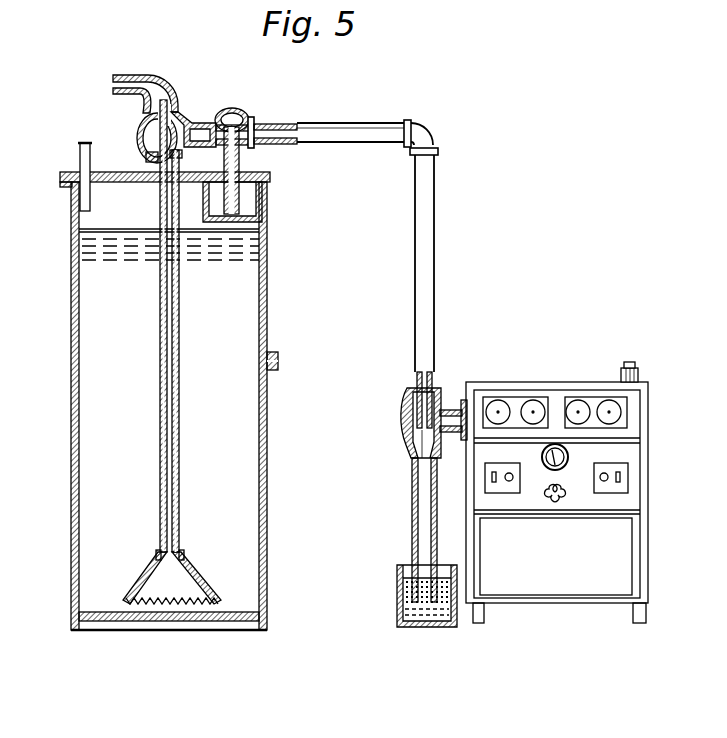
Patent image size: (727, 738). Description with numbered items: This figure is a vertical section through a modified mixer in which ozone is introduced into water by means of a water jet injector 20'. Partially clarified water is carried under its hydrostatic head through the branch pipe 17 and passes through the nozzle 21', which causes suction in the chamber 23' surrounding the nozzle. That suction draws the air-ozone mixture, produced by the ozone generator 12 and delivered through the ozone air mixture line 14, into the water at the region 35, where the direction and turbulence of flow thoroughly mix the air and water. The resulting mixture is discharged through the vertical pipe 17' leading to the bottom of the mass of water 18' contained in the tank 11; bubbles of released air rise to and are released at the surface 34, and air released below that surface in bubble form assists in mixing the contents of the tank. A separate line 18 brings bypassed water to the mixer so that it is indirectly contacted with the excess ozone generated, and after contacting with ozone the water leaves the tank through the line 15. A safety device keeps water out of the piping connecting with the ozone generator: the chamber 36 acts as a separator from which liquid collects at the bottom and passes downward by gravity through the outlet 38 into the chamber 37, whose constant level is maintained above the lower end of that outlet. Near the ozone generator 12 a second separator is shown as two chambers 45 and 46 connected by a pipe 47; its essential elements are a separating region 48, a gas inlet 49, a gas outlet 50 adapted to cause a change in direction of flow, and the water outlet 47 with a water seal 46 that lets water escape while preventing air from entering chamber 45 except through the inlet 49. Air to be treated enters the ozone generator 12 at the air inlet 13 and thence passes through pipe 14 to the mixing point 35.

The tank 11 is at (72, 526).
The ozone generator 12 is at (648, 552).
The air inlet 13 is at (634, 368).
The ozone air mixture line 14 is at (400, 141).
The line 15 is at (273, 354).
The branch pipe 17 is at (145, 78).
The vertical pipe 17' is at (169, 352).
The separate line 18 is at (62, 172).
The mass of water 18' is at (200, 351).
The water jet injector 20' is at (138, 133).
The nozzle 21' is at (139, 150).
The chamber 23' is at (195, 106).
The surface 34 is at (85, 231).
The region 35 is at (158, 183).
The chamber 36 is at (235, 108).
The chamber 37 is at (250, 206).
The outlet 38 is at (222, 191).
The chamber 45 is at (402, 422).
The chamber 46 is at (397, 606).
The pipe 47 is at (411, 525).
The separating region 48 is at (412, 396).
The gas inlet 49 is at (446, 405).
The gas outlet 50 is at (424, 431).